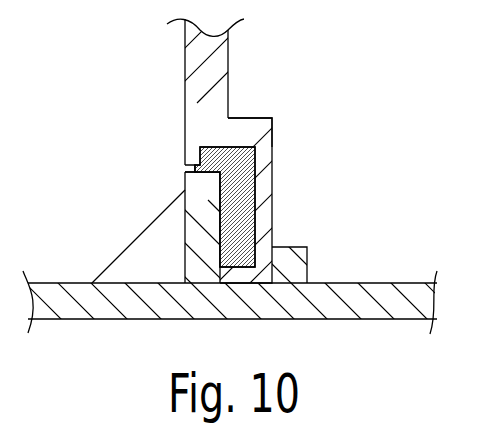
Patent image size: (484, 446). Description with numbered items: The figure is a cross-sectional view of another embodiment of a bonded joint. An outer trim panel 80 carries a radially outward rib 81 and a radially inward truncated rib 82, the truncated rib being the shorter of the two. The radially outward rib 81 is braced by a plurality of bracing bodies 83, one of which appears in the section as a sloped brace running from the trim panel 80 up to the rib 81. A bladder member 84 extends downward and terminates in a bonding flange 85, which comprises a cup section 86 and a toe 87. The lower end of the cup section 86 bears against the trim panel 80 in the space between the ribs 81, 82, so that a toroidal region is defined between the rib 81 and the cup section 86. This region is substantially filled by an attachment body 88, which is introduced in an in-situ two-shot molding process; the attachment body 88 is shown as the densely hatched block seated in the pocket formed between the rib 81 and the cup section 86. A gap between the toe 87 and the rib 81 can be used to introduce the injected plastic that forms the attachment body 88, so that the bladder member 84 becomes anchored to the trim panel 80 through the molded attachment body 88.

The outer trim panel 80 is at (108, 308).
The radially outward rib 81 is at (196, 198).
The radially inward truncated rib 82 is at (293, 266).
The bracing bodies 83 is at (145, 262).
The bladder member 84 is at (193, 65).
The bonding flange 85 is at (275, 115).
The cup section 86 is at (262, 152).
The toe 87 is at (192, 162).
The attachment body 88 is at (240, 162).